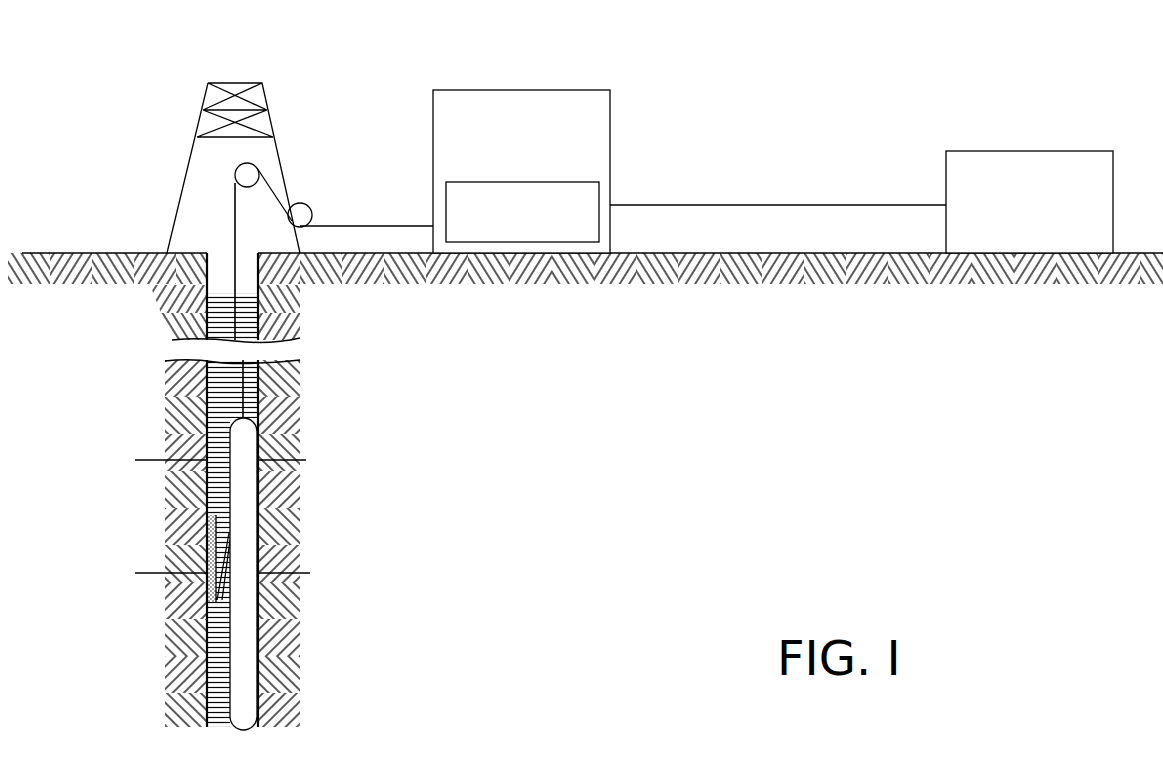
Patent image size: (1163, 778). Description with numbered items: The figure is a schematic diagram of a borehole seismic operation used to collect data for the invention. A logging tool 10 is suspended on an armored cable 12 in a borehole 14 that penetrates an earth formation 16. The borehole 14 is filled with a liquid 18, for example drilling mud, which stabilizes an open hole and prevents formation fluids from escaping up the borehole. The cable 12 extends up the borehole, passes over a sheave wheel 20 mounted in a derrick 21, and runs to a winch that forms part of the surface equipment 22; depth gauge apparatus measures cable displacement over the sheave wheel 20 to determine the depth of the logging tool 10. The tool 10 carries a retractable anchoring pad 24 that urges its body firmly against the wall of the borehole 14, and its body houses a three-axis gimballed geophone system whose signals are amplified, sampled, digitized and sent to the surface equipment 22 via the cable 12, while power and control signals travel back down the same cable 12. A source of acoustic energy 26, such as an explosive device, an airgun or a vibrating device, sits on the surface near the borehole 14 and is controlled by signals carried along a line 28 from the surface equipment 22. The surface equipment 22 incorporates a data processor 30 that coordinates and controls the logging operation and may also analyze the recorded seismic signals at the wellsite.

The logging tool 10 is at (224, 441).
The armored cable 12 is at (233, 238).
The borehole 14 is at (262, 379).
The earth formation 16 is at (280, 680).
The liquid 18 is at (215, 668).
The sheave wheel 20 is at (251, 170).
The derrick 21 is at (198, 137).
The surface equipment 22 is at (535, 90).
The retractable anchoring pad 24 is at (204, 556).
The source of acoustic energy 26 is at (1005, 151).
The line 28 is at (768, 205).
The data processor 30 is at (589, 205).